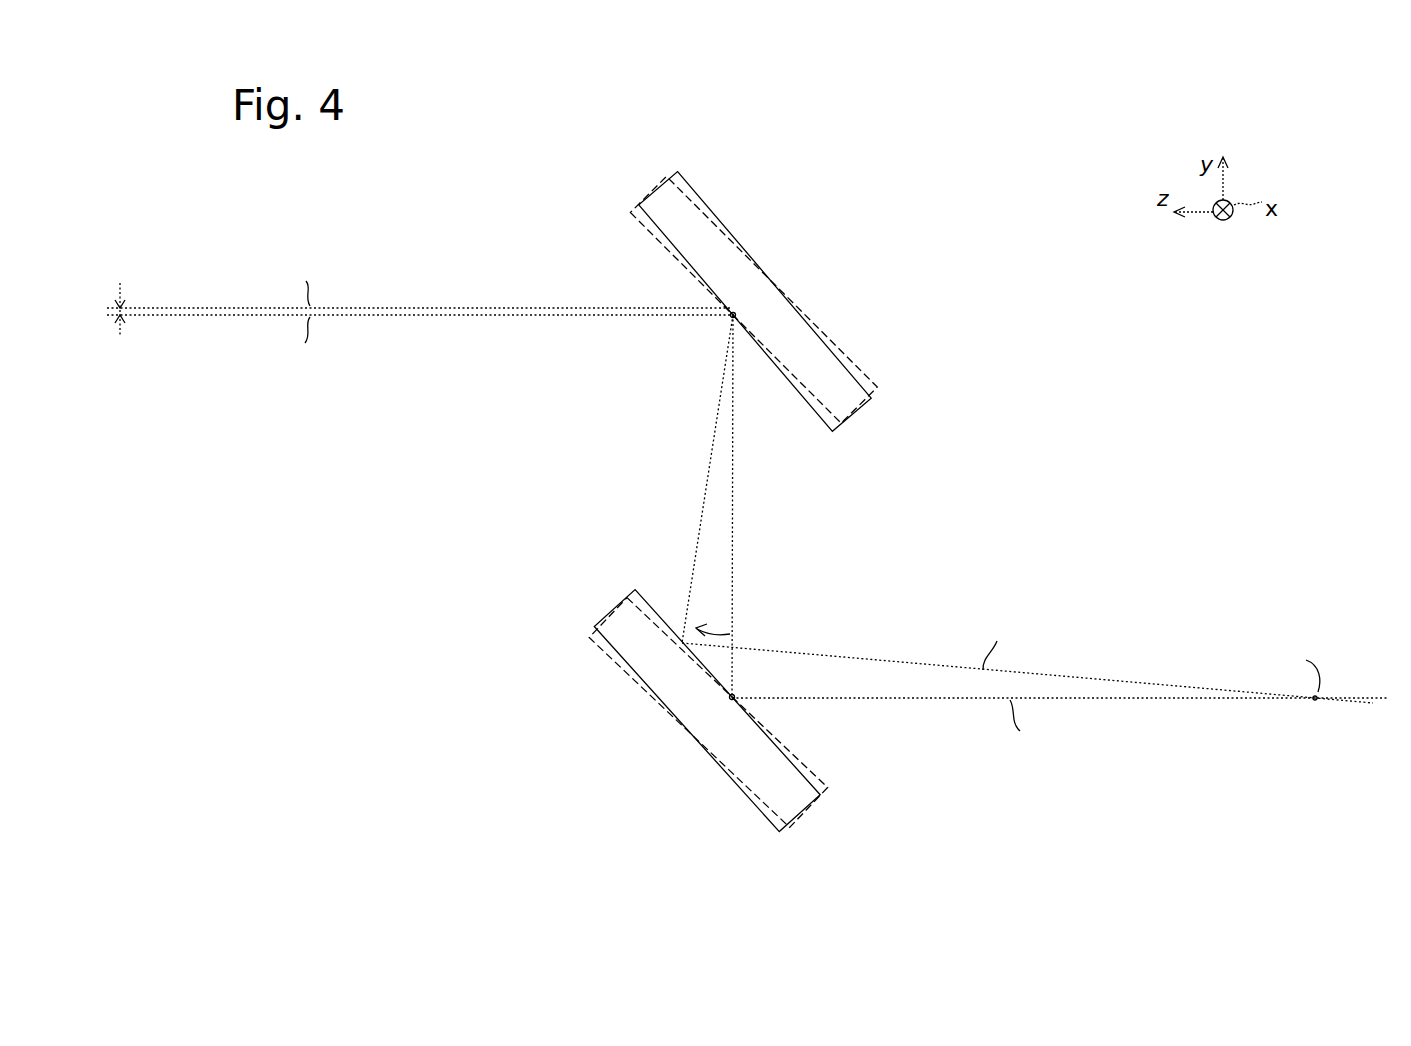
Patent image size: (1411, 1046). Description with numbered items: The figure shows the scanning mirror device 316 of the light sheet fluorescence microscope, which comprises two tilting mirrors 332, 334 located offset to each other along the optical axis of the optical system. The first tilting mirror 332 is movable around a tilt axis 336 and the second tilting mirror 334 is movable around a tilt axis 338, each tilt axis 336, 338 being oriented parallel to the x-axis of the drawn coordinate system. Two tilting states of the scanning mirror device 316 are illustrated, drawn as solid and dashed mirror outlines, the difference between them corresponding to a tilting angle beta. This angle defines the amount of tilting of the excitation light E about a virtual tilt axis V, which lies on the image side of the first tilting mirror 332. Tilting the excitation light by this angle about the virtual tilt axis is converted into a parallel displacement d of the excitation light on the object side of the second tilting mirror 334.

The scanning mirror device 316 is at (1052, 434).
The first tilting mirror 332 is at (800, 819).
The second tilting mirror 334 is at (847, 418).
The tilt axis 336 is at (732, 697).
The tilt axis 338 is at (736, 316).